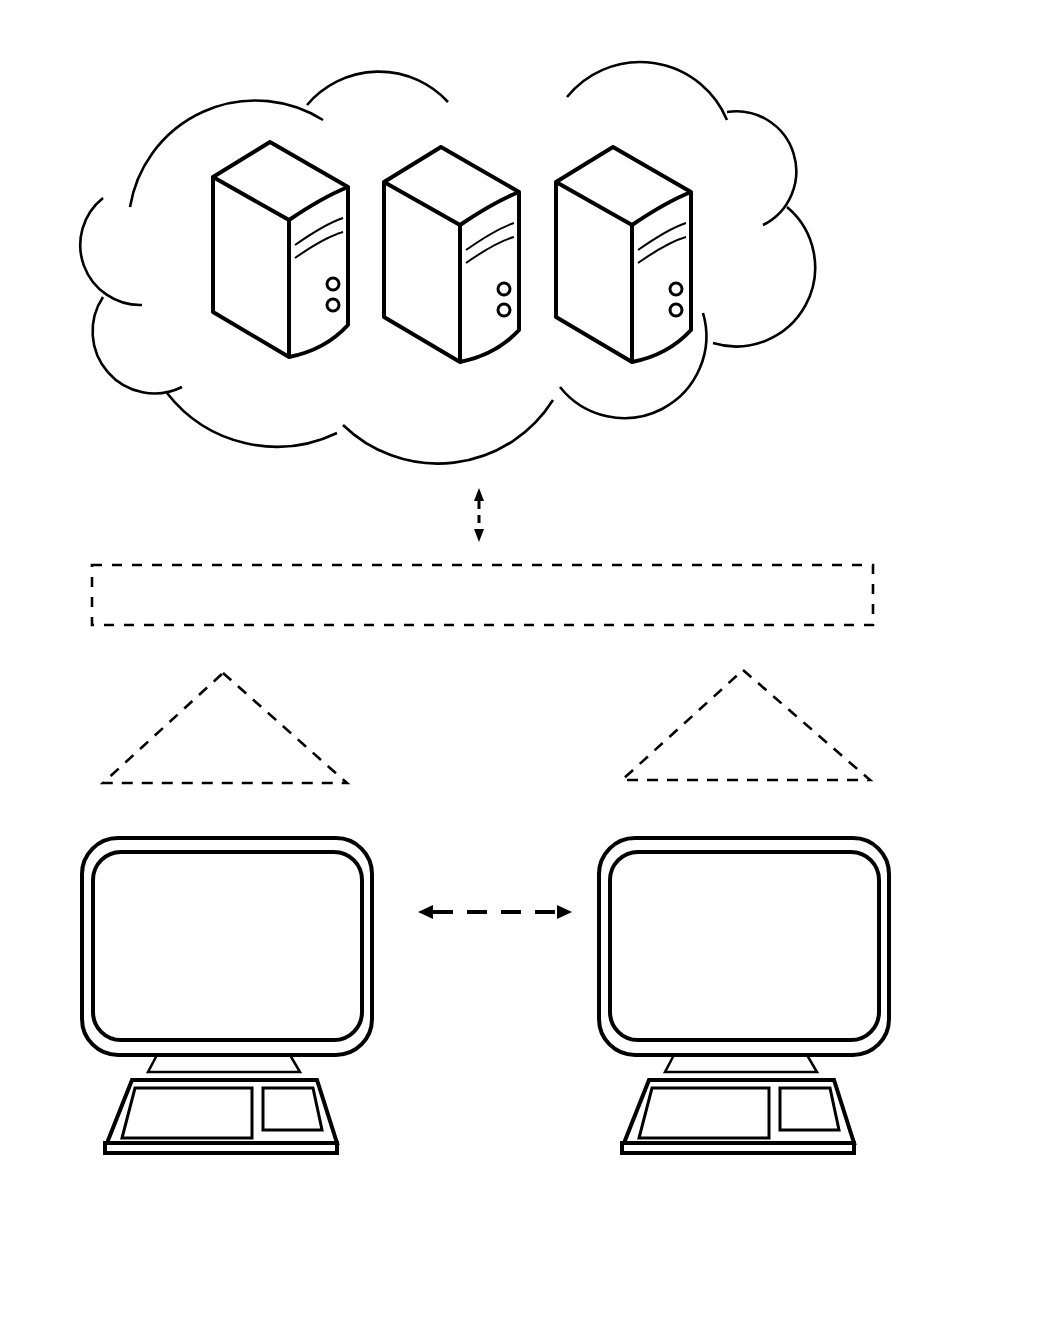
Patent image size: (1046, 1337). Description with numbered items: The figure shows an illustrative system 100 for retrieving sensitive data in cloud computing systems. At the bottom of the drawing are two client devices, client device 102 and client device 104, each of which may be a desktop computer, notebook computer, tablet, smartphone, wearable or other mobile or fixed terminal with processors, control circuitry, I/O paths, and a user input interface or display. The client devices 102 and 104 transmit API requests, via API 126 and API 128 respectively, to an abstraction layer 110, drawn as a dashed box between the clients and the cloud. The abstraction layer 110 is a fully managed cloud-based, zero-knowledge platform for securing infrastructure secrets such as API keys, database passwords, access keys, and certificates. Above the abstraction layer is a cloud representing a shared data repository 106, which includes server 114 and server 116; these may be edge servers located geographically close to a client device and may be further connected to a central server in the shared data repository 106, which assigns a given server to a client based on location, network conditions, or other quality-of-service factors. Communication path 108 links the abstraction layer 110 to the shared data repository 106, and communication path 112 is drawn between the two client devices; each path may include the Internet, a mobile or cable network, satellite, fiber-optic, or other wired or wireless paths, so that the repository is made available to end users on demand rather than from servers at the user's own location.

The system 100 is at (456, 29).
The client device 102 is at (338, 892).
The client device 104 is at (840, 887).
The shared data repository 106 is at (749, 300).
The communication path 108 is at (502, 530).
The abstraction layer 110 is at (462, 607).
The communication path 112 is at (478, 878).
The server 114 is at (457, 182).
The server 116 is at (628, 170).
The API 126 is at (198, 757).
The API 128 is at (728, 749).